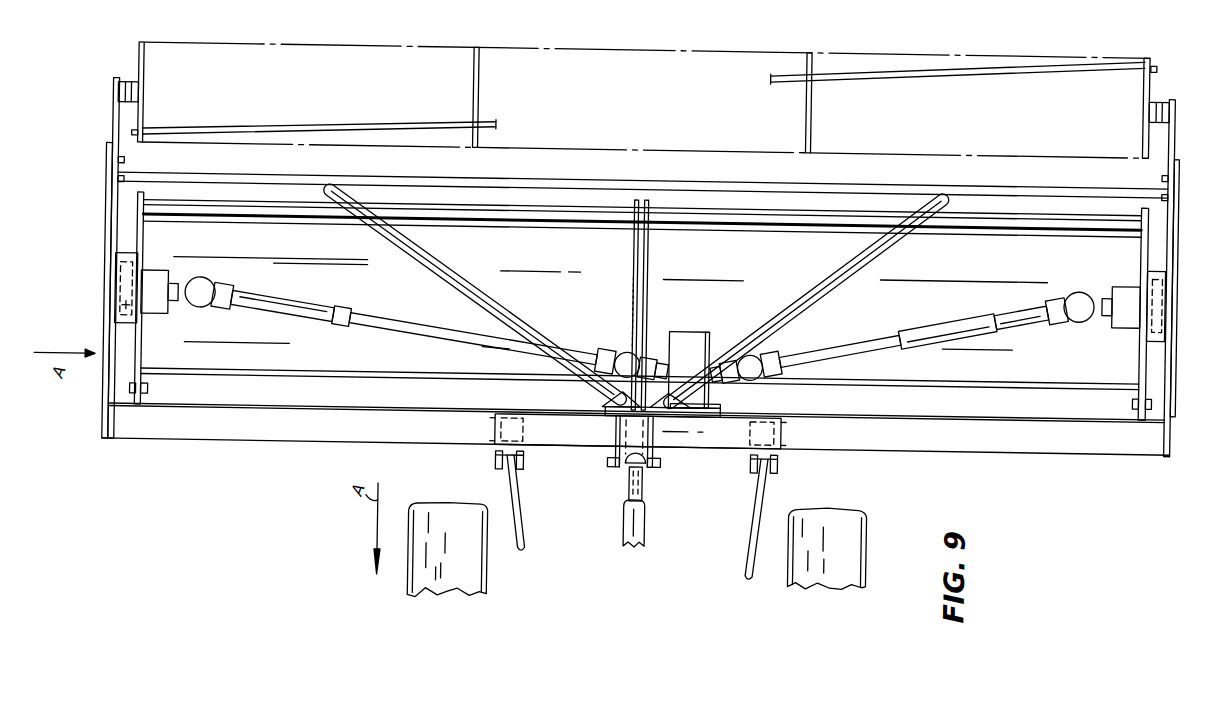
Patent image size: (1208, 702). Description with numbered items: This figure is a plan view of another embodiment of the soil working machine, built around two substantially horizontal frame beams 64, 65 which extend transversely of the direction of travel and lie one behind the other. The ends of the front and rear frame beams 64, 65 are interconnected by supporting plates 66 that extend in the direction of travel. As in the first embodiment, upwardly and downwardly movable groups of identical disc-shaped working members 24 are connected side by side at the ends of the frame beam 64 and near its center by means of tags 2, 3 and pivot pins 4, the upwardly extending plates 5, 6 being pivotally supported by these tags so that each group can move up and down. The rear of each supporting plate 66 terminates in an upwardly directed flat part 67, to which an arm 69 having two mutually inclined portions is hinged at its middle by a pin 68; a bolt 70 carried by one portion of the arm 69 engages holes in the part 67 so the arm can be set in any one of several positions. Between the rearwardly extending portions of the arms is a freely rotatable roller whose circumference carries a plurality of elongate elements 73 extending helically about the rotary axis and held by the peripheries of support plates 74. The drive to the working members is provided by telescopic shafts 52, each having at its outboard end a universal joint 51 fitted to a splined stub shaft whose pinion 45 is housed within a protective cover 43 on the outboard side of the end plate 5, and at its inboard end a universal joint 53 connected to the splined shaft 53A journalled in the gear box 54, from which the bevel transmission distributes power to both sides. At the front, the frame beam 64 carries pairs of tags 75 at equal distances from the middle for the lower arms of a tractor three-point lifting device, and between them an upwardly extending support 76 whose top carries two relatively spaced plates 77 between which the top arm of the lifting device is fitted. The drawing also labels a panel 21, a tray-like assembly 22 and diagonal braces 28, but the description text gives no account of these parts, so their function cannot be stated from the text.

The tags 2 is at (140, 412).
The tags 3 is at (676, 384).
The pivot pins 4 is at (149, 390).
The plates 5 is at (150, 228).
The plates 6 is at (633, 266).
The screen panel 21 is at (293, 237).
The tray 22 is at (652, 33).
The working members 24 is at (146, 72).
The diagonal brace 28 is at (470, 285).
The protective cover 43 is at (115, 268).
The pinion 45 is at (115, 320).
The universal joint 51 is at (195, 300).
The telescopic shaft 52 is at (385, 325).
The universal joint 53 is at (623, 342).
The shaft 53A is at (660, 326).
The gear box 54 is at (688, 322).
The frame beam 64 is at (226, 426).
The frame beam 65 is at (562, 187).
The supporting plates 66 is at (102, 412).
The flat part 67 is at (700, 431).
The pin 68 is at (108, 160).
The arm 69 is at (112, 108).
The bolt 70 is at (108, 176).
The elongate elements 73 is at (380, 120).
The support plates 74 is at (470, 85).
The tags 75 is at (526, 461).
The support 76 is at (553, 424).
The plates 77 is at (650, 461).